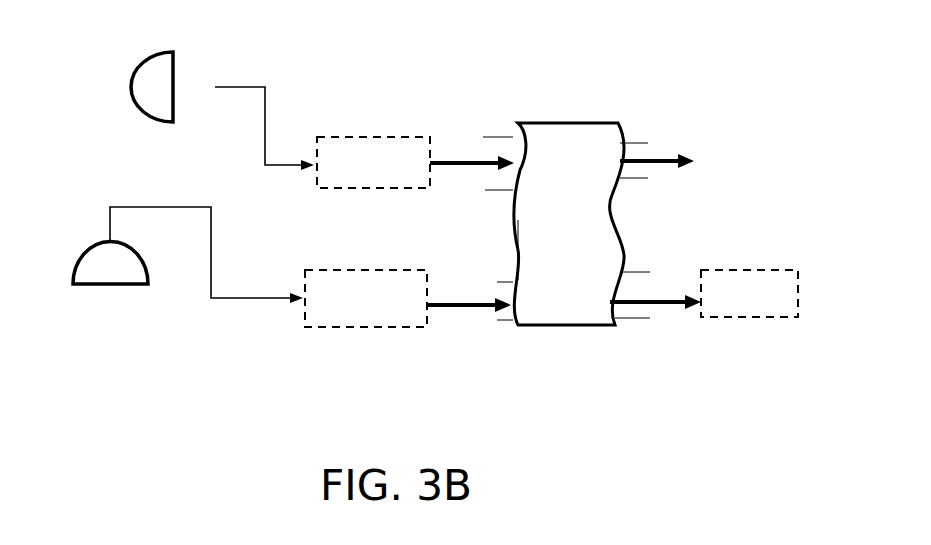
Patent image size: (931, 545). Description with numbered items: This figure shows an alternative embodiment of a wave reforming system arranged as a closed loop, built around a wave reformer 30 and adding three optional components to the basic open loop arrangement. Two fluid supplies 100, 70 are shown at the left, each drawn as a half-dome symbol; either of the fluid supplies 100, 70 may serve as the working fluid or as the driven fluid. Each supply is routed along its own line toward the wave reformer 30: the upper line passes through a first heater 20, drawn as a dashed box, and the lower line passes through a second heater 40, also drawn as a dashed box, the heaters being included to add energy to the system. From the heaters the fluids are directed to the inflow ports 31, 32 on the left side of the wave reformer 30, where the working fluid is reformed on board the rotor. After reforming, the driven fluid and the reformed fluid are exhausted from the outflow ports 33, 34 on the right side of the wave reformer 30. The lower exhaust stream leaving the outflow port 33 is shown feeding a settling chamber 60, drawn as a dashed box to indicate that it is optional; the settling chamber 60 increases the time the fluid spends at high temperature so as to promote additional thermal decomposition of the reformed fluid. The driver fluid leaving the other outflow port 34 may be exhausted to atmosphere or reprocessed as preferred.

The fluid supply 100 is at (172, 97).
The fluid supply 70 is at (122, 285).
The first heater 20 is at (357, 136).
The second heater 40 is at (363, 328).
The wave reformer 30 is at (613, 328).
The inflow port 31 is at (505, 320).
The inflow port 32 is at (500, 192).
The outflow port 33 is at (653, 272).
The outflow port 34 is at (640, 143).
The settling chamber 60 is at (765, 268).